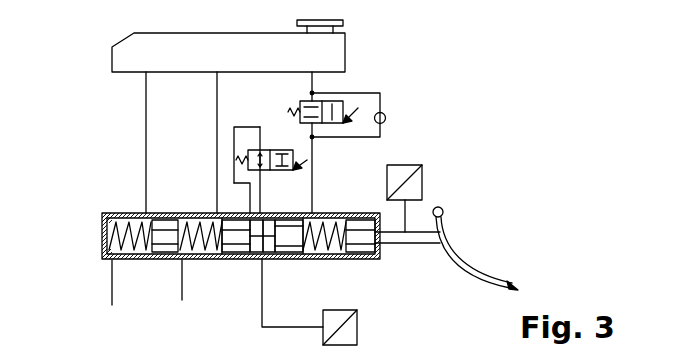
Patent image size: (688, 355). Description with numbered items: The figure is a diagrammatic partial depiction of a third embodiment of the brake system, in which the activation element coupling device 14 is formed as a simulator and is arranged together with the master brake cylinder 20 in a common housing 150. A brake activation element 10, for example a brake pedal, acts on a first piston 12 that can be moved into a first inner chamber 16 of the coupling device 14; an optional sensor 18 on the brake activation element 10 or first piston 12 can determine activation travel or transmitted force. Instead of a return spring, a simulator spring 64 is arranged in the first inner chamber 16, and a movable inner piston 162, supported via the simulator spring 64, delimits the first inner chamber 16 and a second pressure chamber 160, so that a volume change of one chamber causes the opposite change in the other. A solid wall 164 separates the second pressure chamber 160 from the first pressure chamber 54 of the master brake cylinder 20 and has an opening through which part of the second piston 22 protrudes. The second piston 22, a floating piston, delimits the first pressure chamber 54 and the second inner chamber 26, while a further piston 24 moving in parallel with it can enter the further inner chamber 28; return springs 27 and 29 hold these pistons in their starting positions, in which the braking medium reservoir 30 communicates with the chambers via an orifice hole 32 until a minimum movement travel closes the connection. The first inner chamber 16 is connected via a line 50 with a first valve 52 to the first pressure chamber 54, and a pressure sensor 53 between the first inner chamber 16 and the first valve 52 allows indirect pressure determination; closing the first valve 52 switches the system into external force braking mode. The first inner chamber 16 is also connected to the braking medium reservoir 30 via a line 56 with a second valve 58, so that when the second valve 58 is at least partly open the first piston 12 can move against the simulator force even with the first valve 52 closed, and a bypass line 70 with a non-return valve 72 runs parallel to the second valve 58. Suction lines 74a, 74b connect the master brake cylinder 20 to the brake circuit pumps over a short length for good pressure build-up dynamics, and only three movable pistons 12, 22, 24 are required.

The brake activation element 10 is at (453, 258).
The first piston 12 is at (372, 206).
The activation element coupling device 14 is at (340, 214).
The first inner chamber 16 is at (333, 214).
The sensor 18 is at (423, 172).
The master brake cylinder 20 is at (100, 238).
The second piston 22 is at (224, 213).
The further piston 24 is at (160, 260).
The second inner chamber 26 is at (224, 260).
The return spring 27 is at (193, 260).
The further inner chamber 28 is at (106, 258).
The return spring 29 is at (128, 260).
The braking medium reservoir 30 is at (112, 48).
The orifice hole 32 is at (146, 182).
The line 50 is at (244, 127).
The first valve 52 is at (272, 150).
The pressure sensor 53 is at (358, 327).
The first pressure chamber 54 is at (276, 212).
The line 56 is at (313, 83).
The second valve 58 is at (340, 101).
The simulator spring 64 is at (355, 260).
The bypass line 70 is at (381, 100).
The non-return valve 72 is at (386, 119).
The suction line 74a is at (182, 298).
The suction line 74b is at (112, 290).
The common housing 150 is at (102, 213).
The second pressure chamber 160 is at (270, 260).
The inner piston 162 is at (312, 260).
The solid wall 164 is at (250, 262).